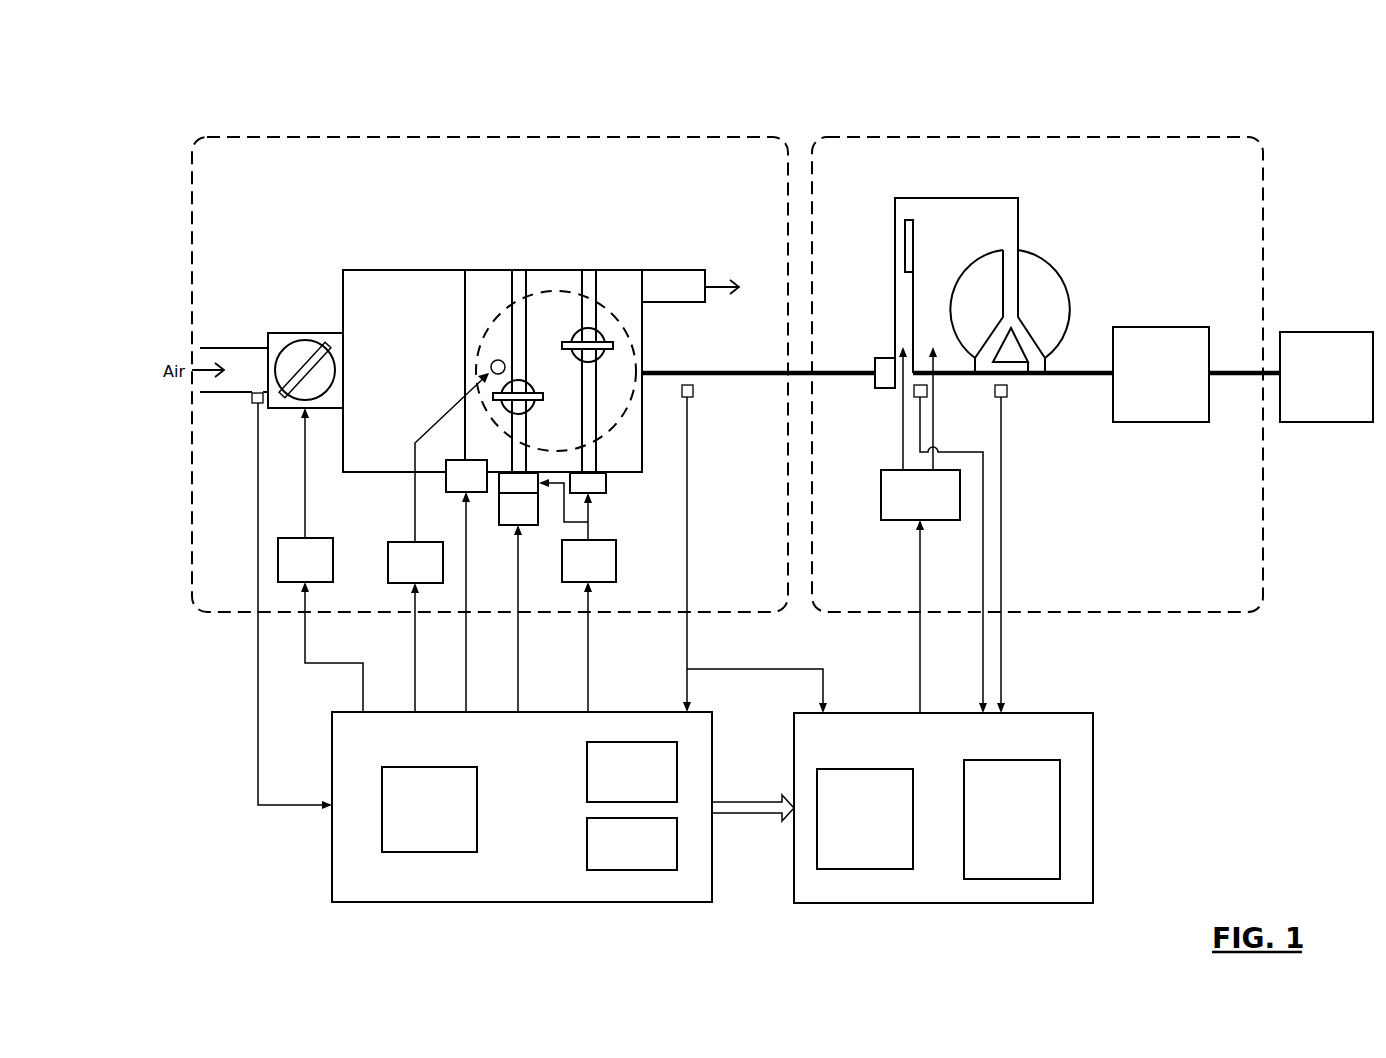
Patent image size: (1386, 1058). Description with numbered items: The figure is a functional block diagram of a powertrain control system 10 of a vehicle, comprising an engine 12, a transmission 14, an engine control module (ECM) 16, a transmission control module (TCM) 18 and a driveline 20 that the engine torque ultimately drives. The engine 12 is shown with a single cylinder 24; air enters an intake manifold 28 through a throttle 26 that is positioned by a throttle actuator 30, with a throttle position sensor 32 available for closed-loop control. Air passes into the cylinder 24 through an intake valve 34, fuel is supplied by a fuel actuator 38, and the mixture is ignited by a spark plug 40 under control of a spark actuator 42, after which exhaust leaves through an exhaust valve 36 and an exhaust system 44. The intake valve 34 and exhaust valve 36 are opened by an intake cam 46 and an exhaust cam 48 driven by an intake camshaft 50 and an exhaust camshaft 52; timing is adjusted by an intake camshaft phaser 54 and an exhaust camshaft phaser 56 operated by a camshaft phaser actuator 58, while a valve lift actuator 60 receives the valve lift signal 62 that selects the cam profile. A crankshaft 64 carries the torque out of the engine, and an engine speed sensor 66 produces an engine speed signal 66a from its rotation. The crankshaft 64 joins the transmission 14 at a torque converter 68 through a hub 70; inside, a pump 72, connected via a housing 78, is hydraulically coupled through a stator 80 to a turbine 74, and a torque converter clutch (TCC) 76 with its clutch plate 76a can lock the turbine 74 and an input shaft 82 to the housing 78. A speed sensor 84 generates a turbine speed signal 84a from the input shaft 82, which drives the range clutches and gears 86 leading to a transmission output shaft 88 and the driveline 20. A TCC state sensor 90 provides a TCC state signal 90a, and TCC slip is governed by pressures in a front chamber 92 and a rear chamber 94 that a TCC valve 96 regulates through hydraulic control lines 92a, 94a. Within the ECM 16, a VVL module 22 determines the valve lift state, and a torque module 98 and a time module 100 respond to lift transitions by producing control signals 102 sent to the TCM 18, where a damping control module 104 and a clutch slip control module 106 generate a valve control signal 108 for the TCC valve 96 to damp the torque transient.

The powertrain control system 10 is at (1300, 117).
The engine 12 is at (247, 137).
The transmission 14 is at (873, 137).
The engine control module (ECM) 16 is at (330, 863).
The transmission control module (TCM) 18 is at (1093, 842).
The driveline 20 is at (1327, 332).
The VVL module 22 is at (415, 852).
The cylinder 24 is at (600, 303).
The throttle 26 is at (292, 334).
The intake manifold 28 is at (437, 270).
The throttle actuator 30 is at (335, 538).
The throttle position sensor 32 is at (255, 403).
The intake valve 34 is at (533, 381).
The exhaust valve 36 is at (602, 357).
The fuel actuator 38 is at (480, 494).
The spark plug 40 is at (500, 359).
The spark actuator 42 is at (388, 542).
The exhaust system 44 is at (678, 303).
The intake cam 46 is at (543, 408).
The exhaust cam 48 is at (632, 347).
The intake camshaft 50 is at (520, 270).
The exhaust camshaft 52 is at (597, 270).
The intake camshaft phaser 54 is at (497, 480).
The exhaust camshaft phaser 56 is at (608, 480).
The camshaft phaser actuator 58 is at (617, 557).
The valve lift actuator 60 is at (538, 525).
The valve lift signal 62 is at (518, 678).
The crankshaft 64 is at (750, 380).
The engine speed sensor 66 is at (693, 397).
The engine speed signal 66a is at (688, 512).
The torque converter 68 is at (1035, 221).
The hub 70 is at (875, 358).
The pump 72 is at (1063, 275).
The turbine 74 is at (1002, 250).
The torque converter clutch (TCC) 76 is at (903, 209).
The clutch plate 76a is at (915, 242).
The housing 78 is at (895, 337).
The stator 80 is at (1027, 373).
The input shaft 82 is at (1092, 380).
The speed sensor 84 is at (1007, 397).
The turbine speed signal 84a is at (1002, 513).
The range clutches and gears 86 is at (1180, 327).
The transmission output shaft 88 is at (1232, 380).
The TCC state sensor 90 is at (913, 390).
The TCC state signal 90a is at (983, 637).
The front chamber 92 is at (900, 288).
The hydraulic control line 92a is at (903, 432).
The rear chamber 94 is at (931, 309).
The hydraulic control line 94a is at (933, 408).
The TCC valve 96 is at (935, 522).
The torque module 98 is at (587, 785).
The time module 100 is at (610, 870).
The control signals 102 is at (728, 817).
The damping control module 104 is at (862, 870).
The clutch slip control module 106 is at (1023, 879).
The valve control signal 108 is at (920, 555).